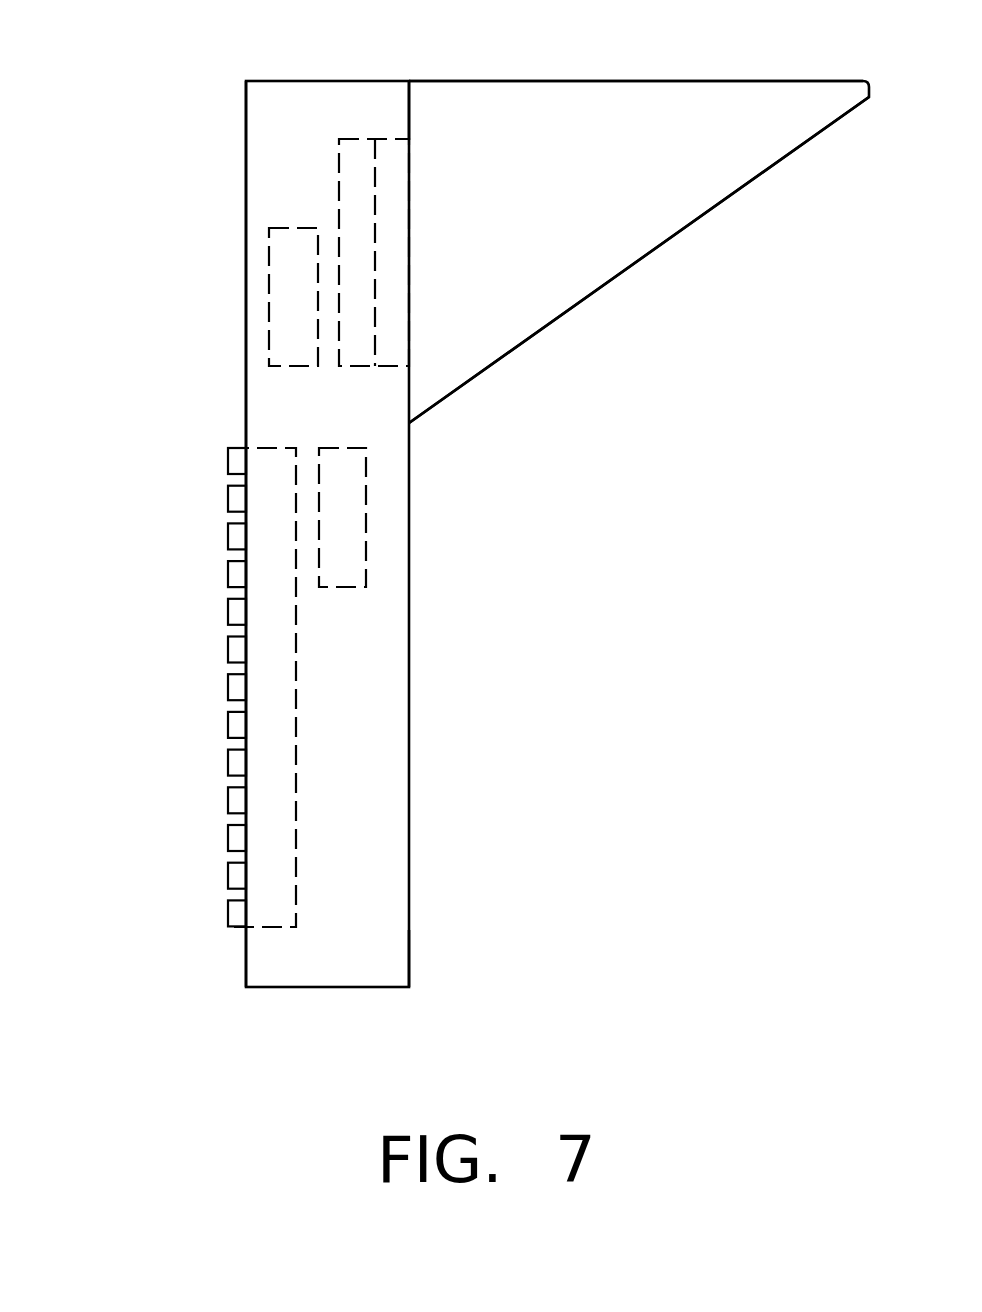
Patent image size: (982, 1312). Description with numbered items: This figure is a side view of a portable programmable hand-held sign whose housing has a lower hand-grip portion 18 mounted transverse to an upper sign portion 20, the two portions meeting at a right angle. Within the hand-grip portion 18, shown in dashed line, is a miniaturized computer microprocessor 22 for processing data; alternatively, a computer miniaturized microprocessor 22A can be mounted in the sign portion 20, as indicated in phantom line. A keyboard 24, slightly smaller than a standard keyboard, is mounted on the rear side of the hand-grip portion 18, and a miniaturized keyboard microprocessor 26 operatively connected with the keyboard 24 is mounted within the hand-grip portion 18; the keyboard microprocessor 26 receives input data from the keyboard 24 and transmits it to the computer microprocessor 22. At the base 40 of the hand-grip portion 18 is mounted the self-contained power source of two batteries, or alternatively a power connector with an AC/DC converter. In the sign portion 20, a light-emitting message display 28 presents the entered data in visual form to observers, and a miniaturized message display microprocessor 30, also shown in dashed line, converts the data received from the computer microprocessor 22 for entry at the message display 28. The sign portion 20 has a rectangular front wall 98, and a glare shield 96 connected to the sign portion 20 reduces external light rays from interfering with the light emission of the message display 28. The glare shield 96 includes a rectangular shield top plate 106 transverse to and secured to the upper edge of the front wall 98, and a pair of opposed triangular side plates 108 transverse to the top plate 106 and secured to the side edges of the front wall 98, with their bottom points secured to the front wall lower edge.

The lower hand-grip portion 18 is at (412, 783).
The upper sign portion 20 is at (243, 132).
The computer microprocessor 22 is at (342, 565).
The computer miniaturized microprocessor 22A is at (290, 273).
The keyboard 24 is at (170, 687).
The keyboard microprocessor 26 is at (268, 689).
The light-emitting message display 28 is at (392, 195).
The message display microprocessor 30 is at (360, 283).
The base 40 is at (390, 952).
The glare shield 96 is at (645, 101).
The front wall 98 is at (409, 122).
The shield top plate 106 is at (603, 80).
The side plate 108 is at (580, 275).